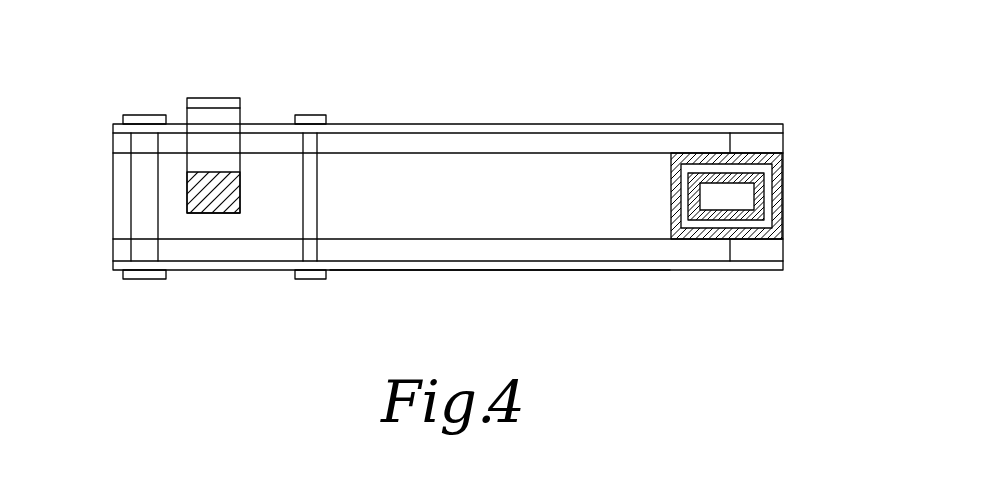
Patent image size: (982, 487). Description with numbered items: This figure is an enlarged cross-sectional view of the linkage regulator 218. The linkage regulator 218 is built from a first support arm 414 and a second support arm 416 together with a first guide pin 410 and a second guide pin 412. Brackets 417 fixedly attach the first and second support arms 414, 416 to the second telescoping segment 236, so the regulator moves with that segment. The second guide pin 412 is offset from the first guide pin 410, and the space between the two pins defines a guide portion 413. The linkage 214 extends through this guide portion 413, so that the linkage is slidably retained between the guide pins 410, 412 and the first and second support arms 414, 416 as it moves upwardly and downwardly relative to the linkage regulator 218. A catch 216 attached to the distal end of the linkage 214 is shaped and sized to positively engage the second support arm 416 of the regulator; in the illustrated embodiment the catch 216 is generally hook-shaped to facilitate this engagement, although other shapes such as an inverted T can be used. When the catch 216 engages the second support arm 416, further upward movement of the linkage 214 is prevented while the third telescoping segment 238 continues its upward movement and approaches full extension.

The linkage 214 is at (229, 214).
The catch 216 is at (215, 97).
The linkage regulator 218 is at (436, 285).
The second telescoping segment 236 is at (778, 192).
The third telescoping segment 238 is at (707, 215).
The first guide pin 410 is at (140, 114).
The second guide pin 412 is at (313, 114).
The guide portion 413 is at (172, 190).
The first support arm 414 is at (598, 278).
The second support arm 416 is at (550, 124).
The brackets 417 is at (777, 143).